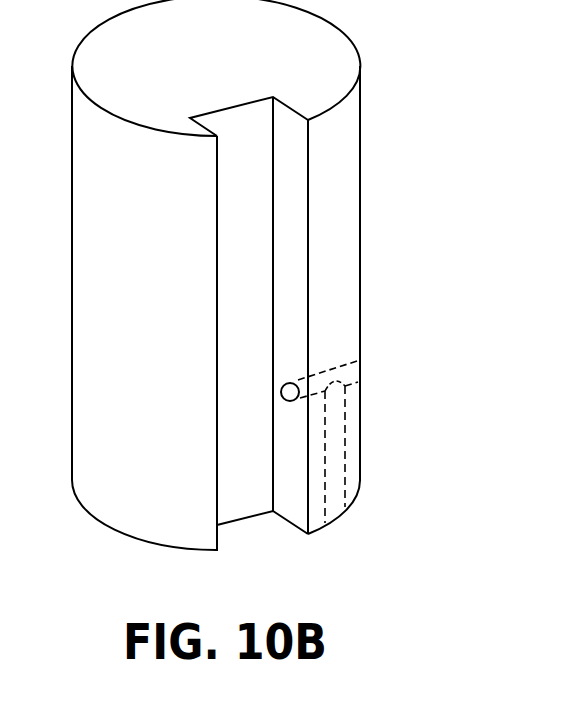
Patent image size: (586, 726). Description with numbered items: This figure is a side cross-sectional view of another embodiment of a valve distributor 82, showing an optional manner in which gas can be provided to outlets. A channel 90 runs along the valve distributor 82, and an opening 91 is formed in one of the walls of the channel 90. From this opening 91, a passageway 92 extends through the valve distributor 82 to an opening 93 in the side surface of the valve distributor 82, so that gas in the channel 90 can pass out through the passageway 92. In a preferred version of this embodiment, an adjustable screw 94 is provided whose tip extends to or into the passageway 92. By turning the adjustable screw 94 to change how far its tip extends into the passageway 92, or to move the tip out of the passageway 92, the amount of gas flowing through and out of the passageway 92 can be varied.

The valve distributor 82 is at (123, 190).
The channel 90 is at (268, 546).
The opening 91 is at (288, 383).
The passageway 92 is at (327, 366).
The opening 93 is at (360, 372).
The adjustable screw 94 is at (340, 512).